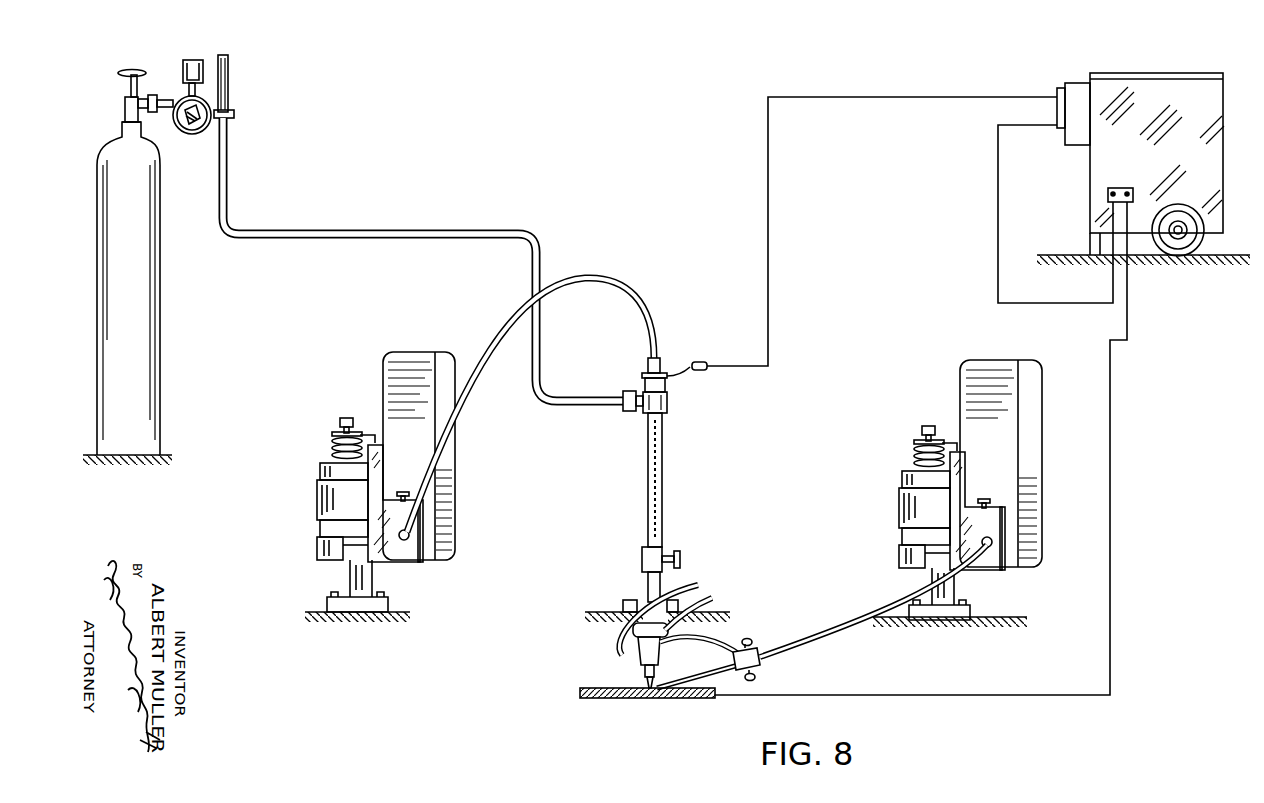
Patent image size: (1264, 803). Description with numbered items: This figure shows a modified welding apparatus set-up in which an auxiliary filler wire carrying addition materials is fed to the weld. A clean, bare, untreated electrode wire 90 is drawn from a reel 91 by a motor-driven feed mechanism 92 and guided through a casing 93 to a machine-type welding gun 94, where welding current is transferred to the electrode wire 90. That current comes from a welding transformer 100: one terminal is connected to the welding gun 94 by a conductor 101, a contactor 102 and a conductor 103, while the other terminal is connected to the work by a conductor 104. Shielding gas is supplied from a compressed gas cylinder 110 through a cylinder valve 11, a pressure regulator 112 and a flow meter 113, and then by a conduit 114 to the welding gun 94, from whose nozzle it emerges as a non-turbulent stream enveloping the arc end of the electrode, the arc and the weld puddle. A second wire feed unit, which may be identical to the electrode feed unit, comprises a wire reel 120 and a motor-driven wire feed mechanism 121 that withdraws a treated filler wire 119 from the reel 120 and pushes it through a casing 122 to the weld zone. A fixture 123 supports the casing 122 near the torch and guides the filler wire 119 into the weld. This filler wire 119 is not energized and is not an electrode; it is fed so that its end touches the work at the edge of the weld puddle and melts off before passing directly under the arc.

The cylinder valve 11 is at (130, 111).
The compressed gas cylinder 110 is at (150, 282).
The pressure regulator 112 is at (198, 129).
The flow meter 113 is at (229, 78).
The conduit 114 is at (341, 232).
The reel 91 is at (420, 357).
The motor-driven feed mechanism 92 is at (388, 556).
The casing 93 is at (483, 345).
The welding gun 94 is at (663, 462).
The electrode wire 90 is at (648, 684).
The filler wire 119 is at (668, 693).
The fixture 123 is at (751, 649).
The casing 122 is at (860, 629).
The motor-driven wire feed mechanism 121 is at (981, 566).
The wire reel 120 is at (1037, 422).
The conductor 104 is at (1112, 465).
The conductor 103 is at (770, 177).
The conductor 101 is at (997, 158).
The contactor 102 is at (1062, 86).
The welding transformer 100 is at (1188, 76).